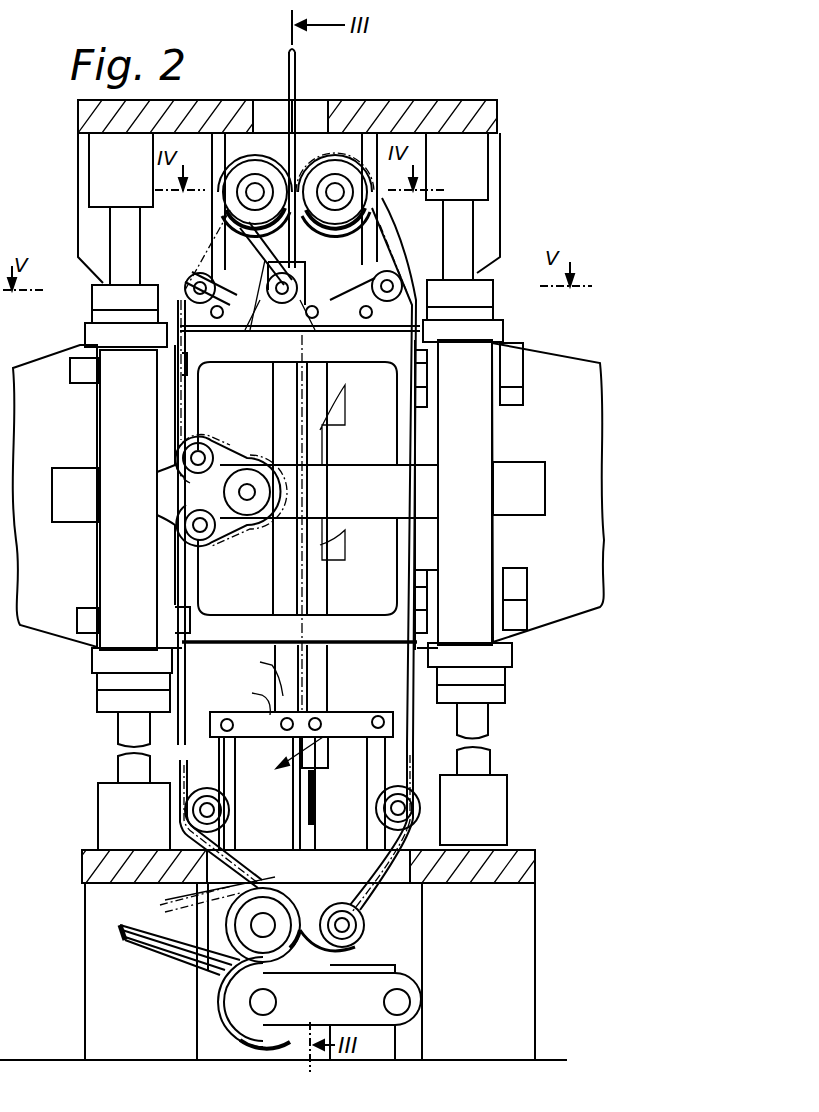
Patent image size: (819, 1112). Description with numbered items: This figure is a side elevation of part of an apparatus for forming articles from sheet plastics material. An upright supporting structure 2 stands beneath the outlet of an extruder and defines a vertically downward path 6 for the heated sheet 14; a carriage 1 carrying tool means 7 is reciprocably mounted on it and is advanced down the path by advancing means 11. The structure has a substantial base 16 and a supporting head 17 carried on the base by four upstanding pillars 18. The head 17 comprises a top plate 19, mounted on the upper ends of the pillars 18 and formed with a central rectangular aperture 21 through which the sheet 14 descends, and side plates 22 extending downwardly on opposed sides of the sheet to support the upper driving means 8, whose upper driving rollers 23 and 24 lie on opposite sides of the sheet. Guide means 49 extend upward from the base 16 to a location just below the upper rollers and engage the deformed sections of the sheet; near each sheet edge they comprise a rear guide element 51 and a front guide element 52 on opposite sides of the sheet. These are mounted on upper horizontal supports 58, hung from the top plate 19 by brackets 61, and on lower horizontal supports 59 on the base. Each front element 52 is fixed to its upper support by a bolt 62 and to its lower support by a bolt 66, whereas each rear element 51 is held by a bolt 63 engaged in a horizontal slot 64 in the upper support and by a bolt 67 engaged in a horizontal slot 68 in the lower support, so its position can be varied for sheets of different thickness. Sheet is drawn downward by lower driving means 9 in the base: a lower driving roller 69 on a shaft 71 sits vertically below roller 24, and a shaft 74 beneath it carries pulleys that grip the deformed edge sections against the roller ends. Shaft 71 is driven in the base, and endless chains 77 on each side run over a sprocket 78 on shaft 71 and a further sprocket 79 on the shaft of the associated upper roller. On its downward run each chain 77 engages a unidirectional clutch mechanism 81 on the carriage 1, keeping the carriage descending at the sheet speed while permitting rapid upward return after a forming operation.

The carriage 1 is at (548, 378).
The supporting structure 2 is at (460, 230).
The path 6 is at (290, 397).
The tool means 7 is at (250, 525).
The driving means 8 is at (335, 195).
The lower driving means 9 is at (263, 925).
The means for advancing the carriage 11 is at (505, 358).
The heated sheet 14 is at (289, 75).
The base 16 is at (510, 958).
The supporting head 17 is at (150, 214).
The pillars 18 is at (478, 762).
The top plate 19 is at (370, 112).
The central rectangular aperture 21 is at (305, 128).
The side plates 22 is at (500, 172).
The upper driving roller 23 is at (336, 224).
The upper driving roller 24 is at (255, 165).
The guide means 49 is at (290, 592).
The guide element 51 is at (285, 757).
The guide element 52 is at (320, 754).
The upper horizontal support 58 is at (328, 345).
The lower horizontal support 59 is at (343, 715).
The bracket 61 is at (215, 240).
The bolt 62 is at (330, 318).
The bolt 63 is at (290, 318).
The horizontal slot 64 is at (256, 318).
The bolt 66 is at (286, 767).
The bolt 67 is at (260, 670).
The horizontal slot 68 is at (245, 696).
The lower driving roller 69 is at (200, 970).
The shaft 71 is at (262, 900).
The shaft 74 is at (255, 1002).
The endless chain 77 is at (392, 866).
The sprocket 78 is at (308, 955).
The sprocket 79 is at (247, 238).
The unidirectional clutch mechanism 81 is at (262, 497).